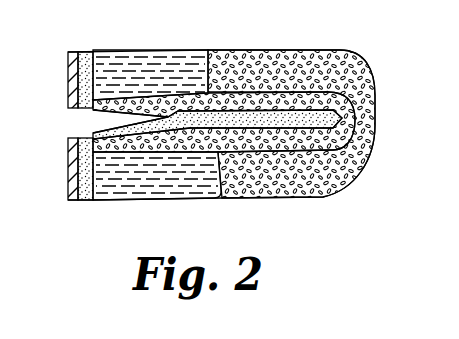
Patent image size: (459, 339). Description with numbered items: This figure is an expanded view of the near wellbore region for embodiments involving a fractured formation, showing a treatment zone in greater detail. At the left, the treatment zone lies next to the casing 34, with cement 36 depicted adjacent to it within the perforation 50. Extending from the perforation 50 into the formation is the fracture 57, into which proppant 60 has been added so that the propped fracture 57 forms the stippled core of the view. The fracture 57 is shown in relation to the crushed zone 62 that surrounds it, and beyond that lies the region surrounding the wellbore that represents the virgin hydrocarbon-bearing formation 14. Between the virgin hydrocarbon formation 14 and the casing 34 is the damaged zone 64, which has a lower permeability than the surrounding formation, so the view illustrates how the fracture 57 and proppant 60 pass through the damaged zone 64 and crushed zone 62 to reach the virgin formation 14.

The virgin hydrocarbon-bearing formation 14 is at (267, 186).
The casing 34 is at (67, 63).
The cement 36 is at (88, 56).
The perforation 50 is at (112, 132).
The fracture 57 is at (272, 120).
The proppant 60 is at (226, 110).
The crushed zone 62 is at (328, 97).
The damaged zone 64 is at (132, 55).